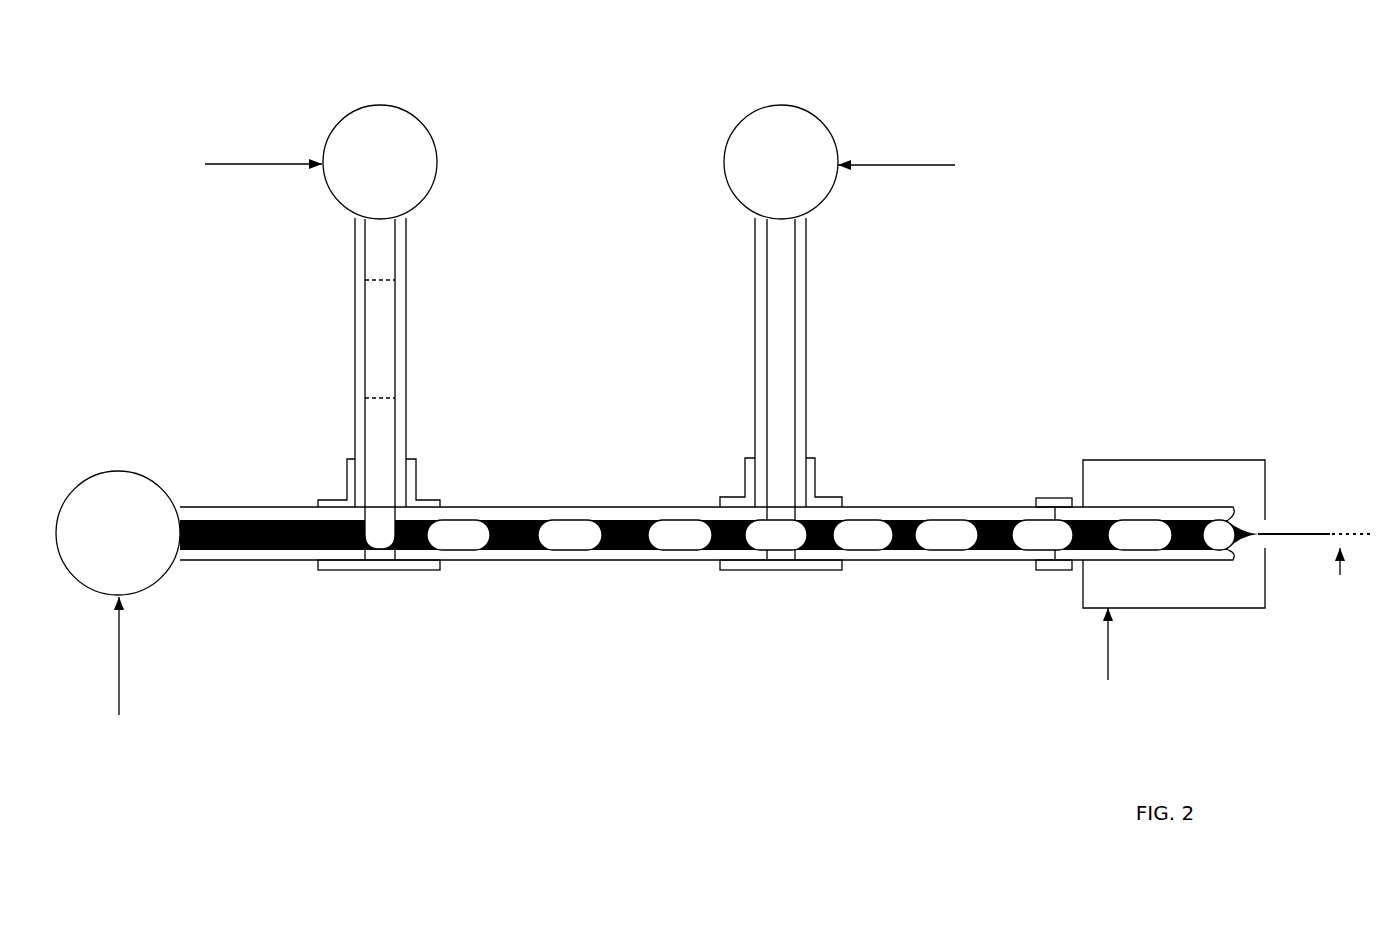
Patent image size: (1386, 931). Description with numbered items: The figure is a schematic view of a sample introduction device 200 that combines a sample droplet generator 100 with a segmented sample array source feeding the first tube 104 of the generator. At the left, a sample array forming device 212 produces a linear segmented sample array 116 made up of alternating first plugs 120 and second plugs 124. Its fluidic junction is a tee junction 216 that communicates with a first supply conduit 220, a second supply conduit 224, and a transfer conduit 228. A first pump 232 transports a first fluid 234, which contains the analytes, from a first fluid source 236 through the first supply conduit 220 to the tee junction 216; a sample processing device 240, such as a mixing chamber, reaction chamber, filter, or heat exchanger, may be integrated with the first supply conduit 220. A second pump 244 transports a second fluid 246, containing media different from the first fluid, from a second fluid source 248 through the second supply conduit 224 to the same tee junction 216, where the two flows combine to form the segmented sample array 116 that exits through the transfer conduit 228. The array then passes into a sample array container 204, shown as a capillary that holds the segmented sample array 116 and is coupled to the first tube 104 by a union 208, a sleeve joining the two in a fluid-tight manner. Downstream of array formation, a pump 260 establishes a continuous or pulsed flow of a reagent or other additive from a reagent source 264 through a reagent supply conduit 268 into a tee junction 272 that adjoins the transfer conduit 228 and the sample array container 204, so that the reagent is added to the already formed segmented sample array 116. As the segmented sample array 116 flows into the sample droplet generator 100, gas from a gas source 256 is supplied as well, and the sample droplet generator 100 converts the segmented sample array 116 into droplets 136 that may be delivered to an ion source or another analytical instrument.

The sample introduction device 200 is at (1143, 150).
The sample droplet generator 100 is at (1160, 438).
The first tube 104 is at (1172, 560).
The segmented sample array 116 is at (776, 514).
The first plugs 120 is at (945, 550).
The second plugs 124 is at (908, 550).
The droplets 136 is at (1340, 573).
The sample array container 204 is at (943, 507).
The union 208 is at (1050, 498).
The sample array forming device 212 is at (310, 687).
The tee junction 216 is at (428, 498).
The first supply conduit 220 is at (406, 247).
The second supply conduit 224 is at (217, 507).
The transfer conduit 228 is at (505, 560).
The first pump 232 is at (380, 162).
The first fluid 234 is at (382, 427).
The first fluid source 236 is at (242, 162).
The sample processing device 240 is at (395, 312).
The second pump 244 is at (118, 533).
The second fluid 246 is at (267, 560).
The second fluid source 248 is at (119, 673).
The gas source 256 is at (1100, 650).
The pump 260 is at (781, 162).
The reagent source 264 is at (900, 165).
The reagent supply conduit 268 is at (806, 307).
The tee junction 272 is at (745, 481).